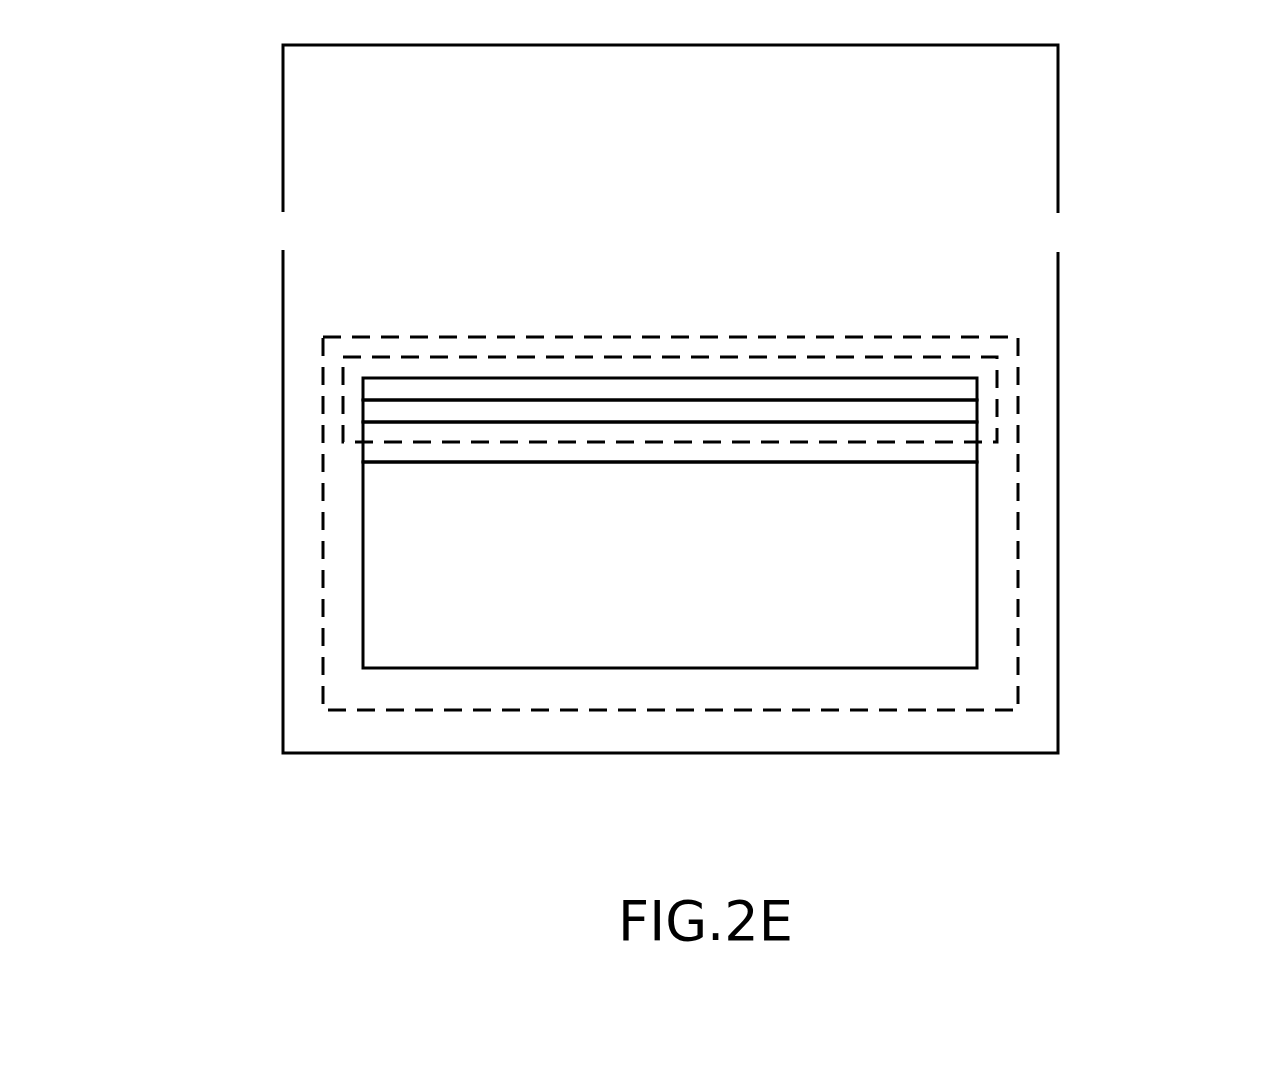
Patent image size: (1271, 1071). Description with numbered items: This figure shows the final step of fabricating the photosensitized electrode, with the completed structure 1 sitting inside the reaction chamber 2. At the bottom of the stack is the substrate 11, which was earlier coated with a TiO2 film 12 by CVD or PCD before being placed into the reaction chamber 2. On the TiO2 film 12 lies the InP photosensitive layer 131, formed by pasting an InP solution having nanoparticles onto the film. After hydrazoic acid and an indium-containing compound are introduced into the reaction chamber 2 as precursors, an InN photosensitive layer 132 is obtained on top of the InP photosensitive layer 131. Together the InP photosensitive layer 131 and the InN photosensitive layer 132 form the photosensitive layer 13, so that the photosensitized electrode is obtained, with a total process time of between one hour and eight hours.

The light emitting device 1 is at (338, 324).
The reaction chamber 2 is at (283, 127).
The substrate 11 is at (977, 565).
The TiO2 film 12 is at (977, 453).
The photosensitive layer 13 is at (331, 408).
The InP photosensitive layer 131 is at (977, 412).
The InN photosensitive layer 132 is at (977, 386).